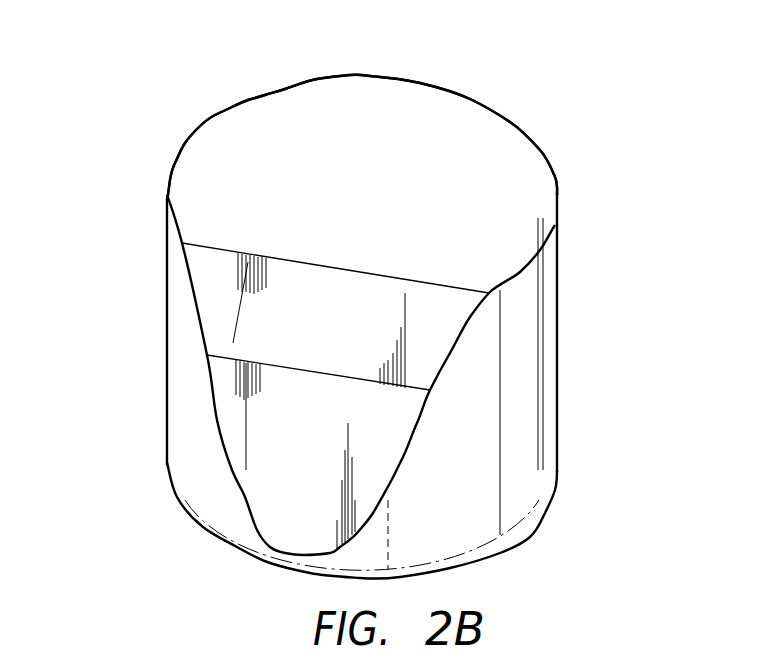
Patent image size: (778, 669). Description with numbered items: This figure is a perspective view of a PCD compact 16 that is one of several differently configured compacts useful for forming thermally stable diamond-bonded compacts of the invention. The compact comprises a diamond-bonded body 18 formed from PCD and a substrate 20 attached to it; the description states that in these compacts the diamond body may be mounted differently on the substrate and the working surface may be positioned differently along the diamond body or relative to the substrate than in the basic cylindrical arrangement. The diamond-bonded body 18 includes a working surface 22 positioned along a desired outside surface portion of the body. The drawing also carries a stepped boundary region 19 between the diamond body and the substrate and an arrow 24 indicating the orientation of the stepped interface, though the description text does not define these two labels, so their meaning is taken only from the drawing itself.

The PCD compact 16 is at (583, 293).
The diamond-bonded body 18 is at (223, 307).
The second step surface 19 is at (289, 412).
The substrate 20 is at (428, 500).
The working surface 22 is at (413, 128).
The flow direction 24 is at (342, 333).